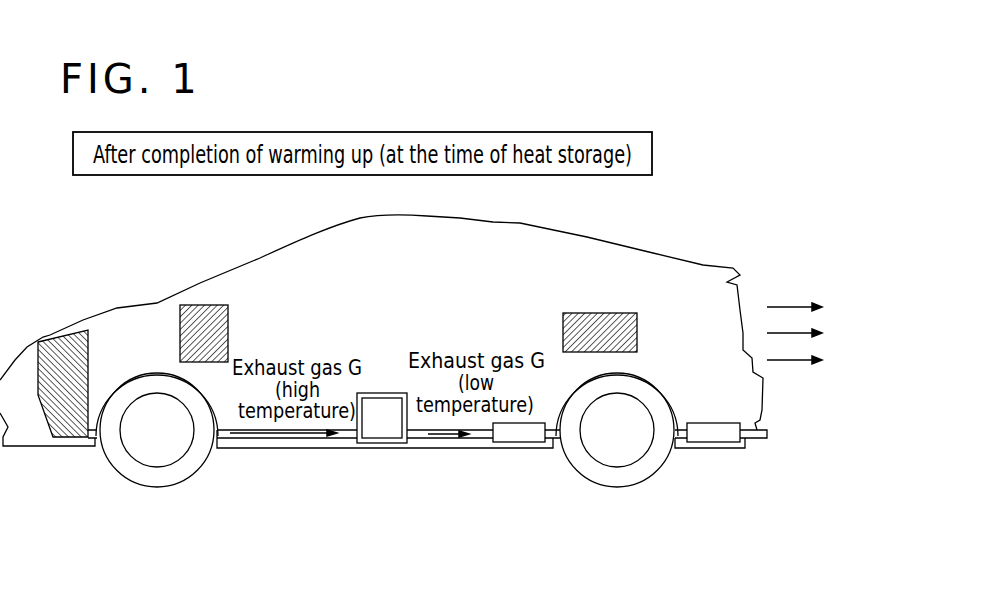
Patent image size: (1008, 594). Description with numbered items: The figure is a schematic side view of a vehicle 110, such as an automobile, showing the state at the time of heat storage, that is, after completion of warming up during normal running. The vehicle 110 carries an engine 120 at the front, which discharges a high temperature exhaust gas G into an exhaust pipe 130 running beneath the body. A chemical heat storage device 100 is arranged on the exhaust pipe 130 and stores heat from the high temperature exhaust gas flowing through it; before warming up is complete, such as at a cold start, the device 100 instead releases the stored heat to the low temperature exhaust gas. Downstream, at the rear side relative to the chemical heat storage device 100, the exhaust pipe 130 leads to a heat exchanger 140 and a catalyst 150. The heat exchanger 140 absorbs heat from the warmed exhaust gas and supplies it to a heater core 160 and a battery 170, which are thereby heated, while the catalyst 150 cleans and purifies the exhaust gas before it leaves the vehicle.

The vehicle 110 is at (698, 176).
The engine 120 is at (61, 340).
The exhaust pipe 130 is at (218, 449).
The chemical heat storage device 100 is at (380, 436).
The heat exchanger 140 is at (520, 433).
The catalyst 150 is at (712, 433).
The heater core 160 is at (208, 304).
The battery 170 is at (602, 312).